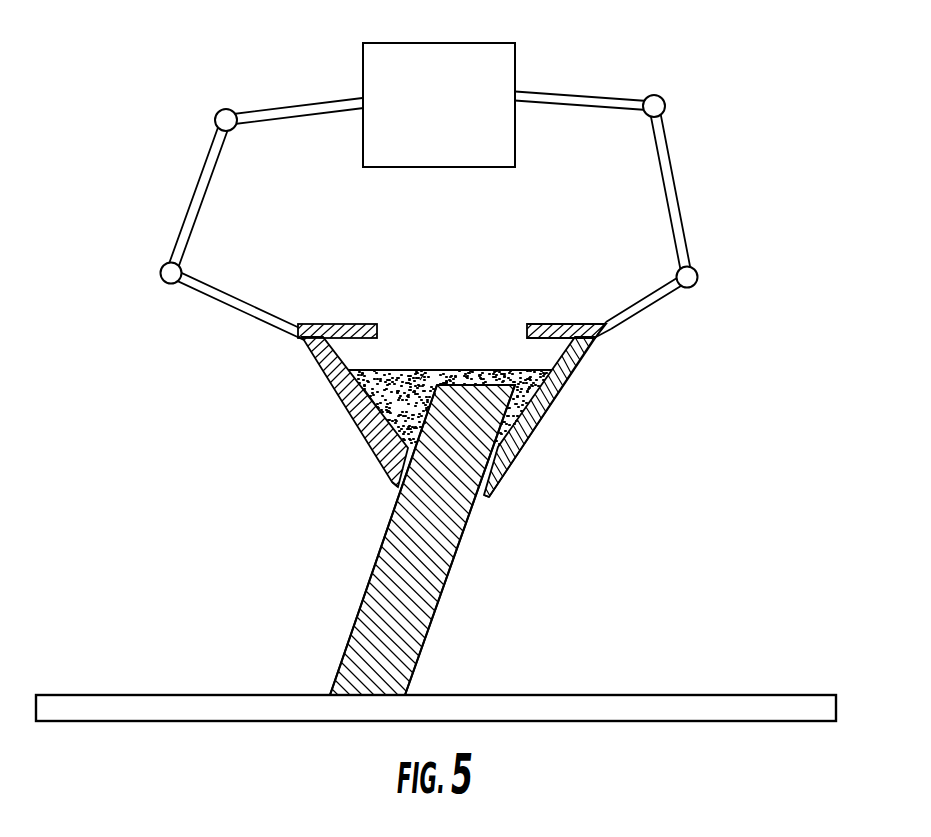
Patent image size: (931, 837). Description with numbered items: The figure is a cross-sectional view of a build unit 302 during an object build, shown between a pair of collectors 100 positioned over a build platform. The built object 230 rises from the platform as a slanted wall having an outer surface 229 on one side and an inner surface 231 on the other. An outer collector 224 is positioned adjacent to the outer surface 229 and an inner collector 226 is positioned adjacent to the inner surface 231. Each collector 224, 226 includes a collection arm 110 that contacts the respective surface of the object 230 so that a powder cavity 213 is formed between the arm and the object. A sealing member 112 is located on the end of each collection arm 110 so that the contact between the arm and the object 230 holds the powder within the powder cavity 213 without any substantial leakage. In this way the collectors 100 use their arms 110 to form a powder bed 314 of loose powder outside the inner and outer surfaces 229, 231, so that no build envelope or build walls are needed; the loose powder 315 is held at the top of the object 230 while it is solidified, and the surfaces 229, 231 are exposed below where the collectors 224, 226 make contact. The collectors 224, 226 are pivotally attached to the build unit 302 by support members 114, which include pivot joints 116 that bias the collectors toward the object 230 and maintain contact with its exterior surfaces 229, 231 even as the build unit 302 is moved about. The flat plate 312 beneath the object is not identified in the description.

The build unit 302 is at (305, 52).
The support member 114 is at (604, 93).
The pivot joint 116 is at (221, 109).
The inner collector 226 is at (302, 324).
The outer collector 224 is at (599, 322).
The collectors 100 is at (564, 323).
The collection arm 110 is at (332, 384).
The powder cavity 213 is at (406, 370).
The loose powder 315 is at (421, 378).
The powder bed 314 is at (380, 406).
The sealing member 112 is at (396, 494).
The outer surface 229 is at (458, 571).
The object 230 is at (414, 610).
The inner surface 231 is at (354, 591).
The base plate 312 is at (673, 707).